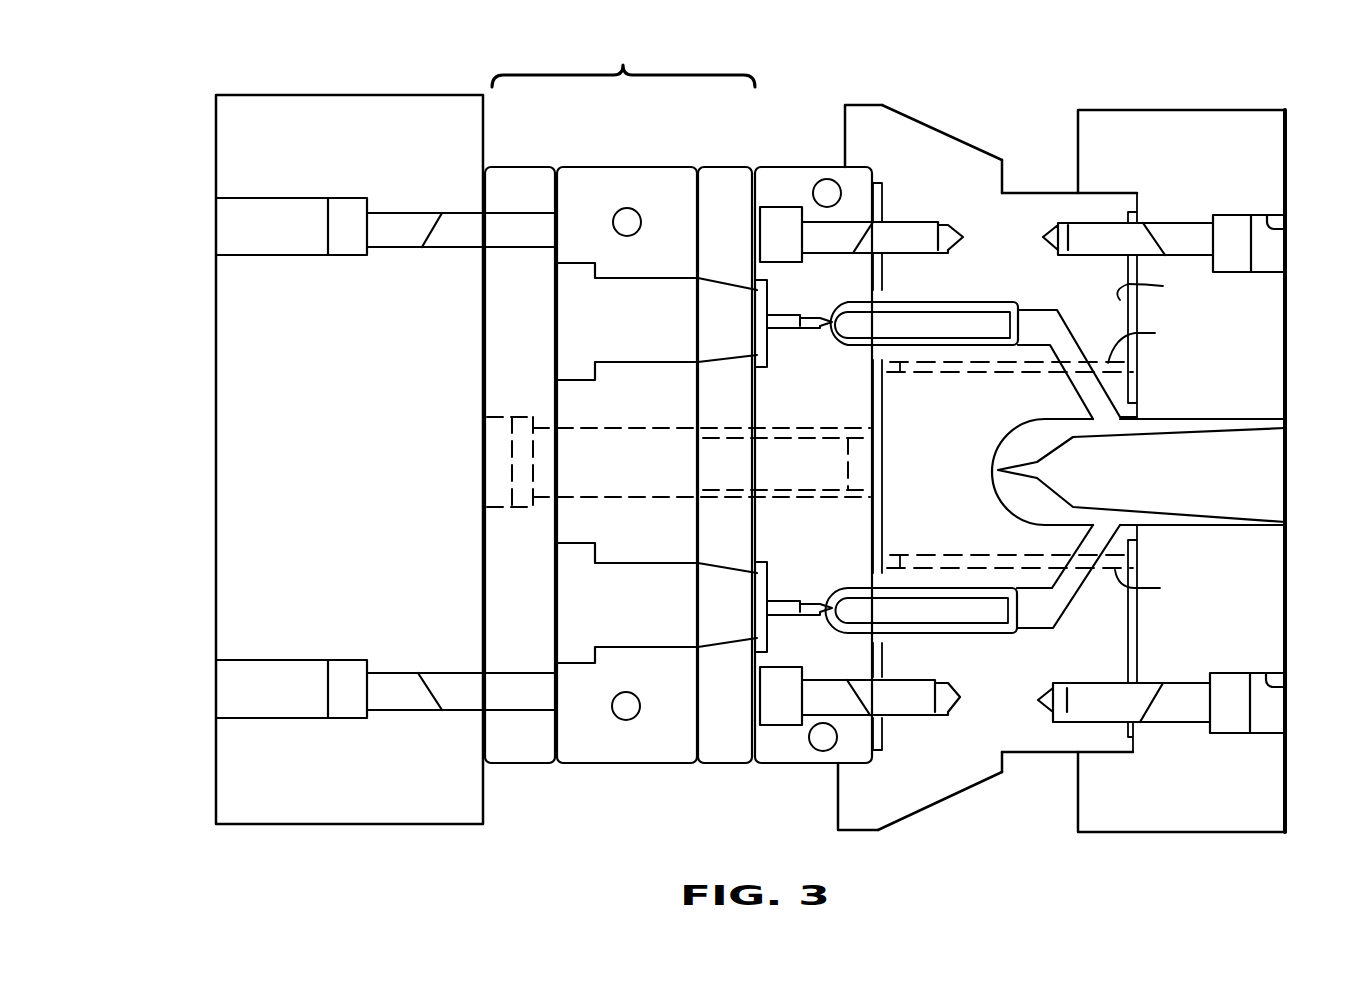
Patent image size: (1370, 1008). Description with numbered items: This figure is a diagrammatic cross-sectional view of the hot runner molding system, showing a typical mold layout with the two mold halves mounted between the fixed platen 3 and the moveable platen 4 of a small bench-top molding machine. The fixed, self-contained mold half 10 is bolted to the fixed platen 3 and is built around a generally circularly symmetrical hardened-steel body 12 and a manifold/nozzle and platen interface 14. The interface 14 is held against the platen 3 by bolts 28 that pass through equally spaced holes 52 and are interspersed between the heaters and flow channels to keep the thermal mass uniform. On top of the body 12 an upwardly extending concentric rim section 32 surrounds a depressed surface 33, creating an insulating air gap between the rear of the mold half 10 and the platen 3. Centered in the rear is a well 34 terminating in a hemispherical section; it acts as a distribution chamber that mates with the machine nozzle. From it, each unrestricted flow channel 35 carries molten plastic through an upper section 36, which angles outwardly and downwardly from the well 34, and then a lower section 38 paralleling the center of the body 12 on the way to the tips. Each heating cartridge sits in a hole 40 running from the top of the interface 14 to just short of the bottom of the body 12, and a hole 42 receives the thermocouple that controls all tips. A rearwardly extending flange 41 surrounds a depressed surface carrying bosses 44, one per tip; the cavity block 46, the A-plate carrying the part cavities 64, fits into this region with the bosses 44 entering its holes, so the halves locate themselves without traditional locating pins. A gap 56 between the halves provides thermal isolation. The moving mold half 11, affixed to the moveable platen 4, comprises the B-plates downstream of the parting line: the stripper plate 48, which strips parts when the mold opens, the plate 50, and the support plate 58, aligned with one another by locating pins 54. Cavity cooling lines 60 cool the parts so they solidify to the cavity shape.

The fixed platen 3 is at (1237, 110).
The moveable platen 4 is at (336, 95).
The fixed self-contained mold half 10 is at (992, 98).
The moving mold half 11 is at (623, 60).
The body 12 is at (992, 152).
The manifold/nozzle and platen interface 14 is at (1041, 191).
The bolts 28 is at (1191, 238).
The concentric rim section 32 is at (1137, 206).
The depressed surface 33 is at (1159, 285).
The well 34 is at (1027, 430).
The flow channel 35 is at (1030, 270).
The upper section 36 is at (1075, 345).
The lower section 38 is at (1032, 322).
The hole 40 is at (1150, 340).
The rearwardly extending flange 41 is at (851, 130).
The hole 42 is at (1157, 587).
The bosses 44 is at (870, 352).
The cavity block (A-plate) 46 is at (797, 166).
The stripper plate 48 is at (735, 166).
The plate 50 is at (633, 166).
The holes 52 is at (1287, 226).
The locating pins 54 is at (733, 455).
The gap 56 is at (878, 468).
The support plate 58 is at (545, 166).
The cavity cooling lines 60 is at (633, 217).
The part cavities 64 is at (770, 288).